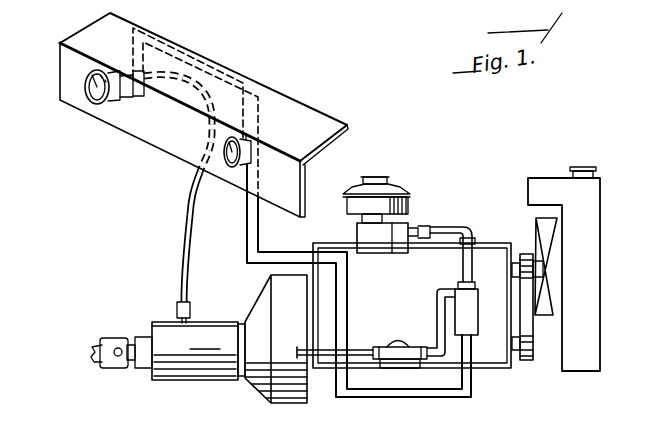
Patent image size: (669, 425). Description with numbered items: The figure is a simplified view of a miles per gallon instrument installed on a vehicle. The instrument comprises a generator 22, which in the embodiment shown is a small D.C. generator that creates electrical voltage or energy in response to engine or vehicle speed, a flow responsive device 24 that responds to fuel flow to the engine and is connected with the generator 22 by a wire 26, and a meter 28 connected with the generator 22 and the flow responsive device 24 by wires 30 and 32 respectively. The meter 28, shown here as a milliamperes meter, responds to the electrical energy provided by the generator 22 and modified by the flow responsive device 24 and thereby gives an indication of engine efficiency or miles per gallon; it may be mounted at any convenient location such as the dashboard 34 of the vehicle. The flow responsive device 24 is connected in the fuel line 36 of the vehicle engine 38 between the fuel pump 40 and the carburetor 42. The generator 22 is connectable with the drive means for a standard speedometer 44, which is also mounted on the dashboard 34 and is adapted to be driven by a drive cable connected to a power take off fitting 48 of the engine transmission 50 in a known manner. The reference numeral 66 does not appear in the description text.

The generator 22 is at (140, 97).
The flow responsive device 24 is at (484, 343).
The wire 26 is at (347, 293).
The meter 28 is at (230, 168).
The wire 30 is at (233, 72).
The wire 32 is at (247, 97).
The dashboard 34 is at (305, 165).
The fuel line 36 is at (440, 310).
The vehicle engine 38 is at (492, 243).
The fuel pump 40 is at (388, 347).
The carburetor 42 is at (408, 212).
The speedometer 44 is at (96, 100).
The power take off fitting 48 is at (177, 317).
The engine transmission 50 is at (196, 366).
The tube 66 is at (182, 282).